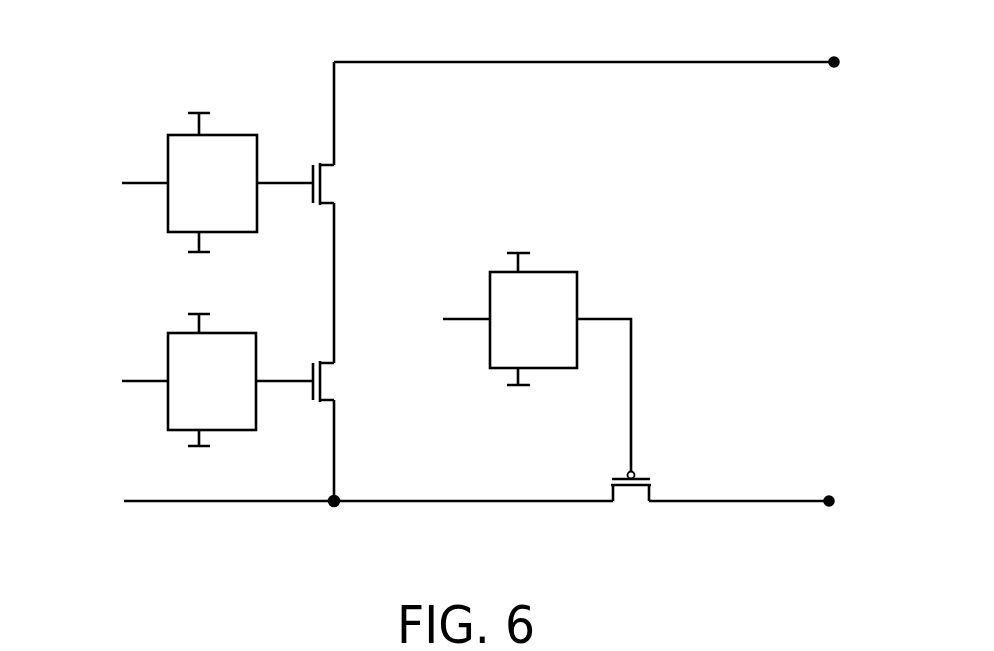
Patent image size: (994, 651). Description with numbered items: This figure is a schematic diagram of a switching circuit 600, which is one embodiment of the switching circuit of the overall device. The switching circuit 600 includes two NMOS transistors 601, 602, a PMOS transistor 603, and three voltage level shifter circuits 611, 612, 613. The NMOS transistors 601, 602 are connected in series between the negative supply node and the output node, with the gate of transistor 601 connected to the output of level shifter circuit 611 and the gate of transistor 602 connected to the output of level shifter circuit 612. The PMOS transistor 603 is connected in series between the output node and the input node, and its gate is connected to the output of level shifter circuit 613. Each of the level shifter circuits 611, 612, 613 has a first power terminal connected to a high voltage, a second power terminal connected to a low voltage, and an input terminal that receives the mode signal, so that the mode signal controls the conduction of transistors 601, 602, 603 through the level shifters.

The switching circuit 600 is at (117, 58).
The NMOS transistor 601 is at (328, 184).
The NMOS transistor 602 is at (328, 382).
The PMOS transistor 603 is at (631, 495).
The level shifter circuit 611 is at (252, 135).
The level shifter circuit 612 is at (250, 333).
The level shifter circuit 613 is at (571, 272).